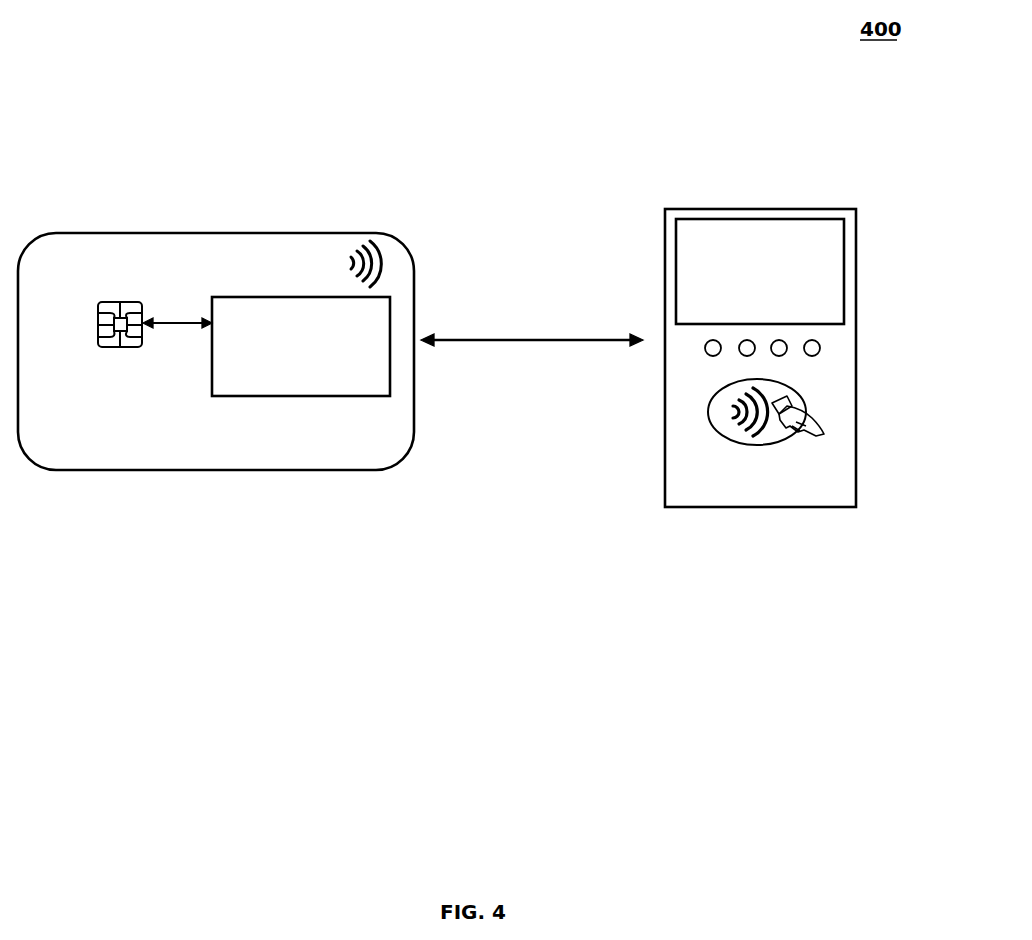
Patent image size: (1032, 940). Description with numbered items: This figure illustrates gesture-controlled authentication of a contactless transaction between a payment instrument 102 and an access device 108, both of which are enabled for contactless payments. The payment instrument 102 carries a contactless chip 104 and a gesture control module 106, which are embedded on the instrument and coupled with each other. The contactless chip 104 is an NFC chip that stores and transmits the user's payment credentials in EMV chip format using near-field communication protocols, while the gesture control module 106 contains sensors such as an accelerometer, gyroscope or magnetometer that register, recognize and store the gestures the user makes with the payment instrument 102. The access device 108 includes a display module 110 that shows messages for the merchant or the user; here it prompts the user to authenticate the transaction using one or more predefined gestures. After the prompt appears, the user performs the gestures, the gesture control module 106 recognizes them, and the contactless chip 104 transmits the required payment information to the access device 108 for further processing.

The payment instrument 102 is at (200, 233).
The contactless chip 104 is at (122, 302).
The gesture control module 106 is at (285, 381).
The access device 108 is at (758, 209).
The display module 110 is at (845, 272).